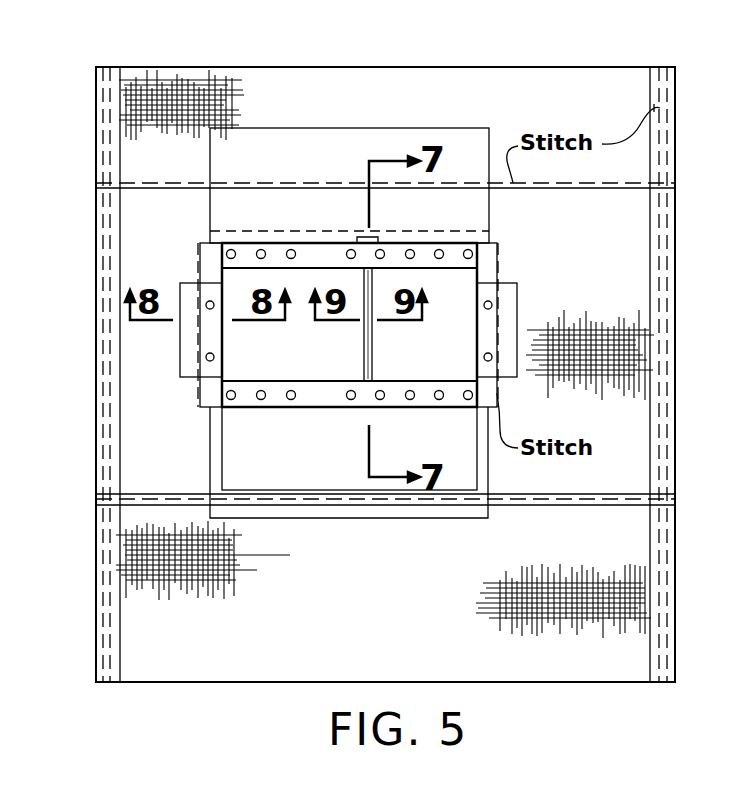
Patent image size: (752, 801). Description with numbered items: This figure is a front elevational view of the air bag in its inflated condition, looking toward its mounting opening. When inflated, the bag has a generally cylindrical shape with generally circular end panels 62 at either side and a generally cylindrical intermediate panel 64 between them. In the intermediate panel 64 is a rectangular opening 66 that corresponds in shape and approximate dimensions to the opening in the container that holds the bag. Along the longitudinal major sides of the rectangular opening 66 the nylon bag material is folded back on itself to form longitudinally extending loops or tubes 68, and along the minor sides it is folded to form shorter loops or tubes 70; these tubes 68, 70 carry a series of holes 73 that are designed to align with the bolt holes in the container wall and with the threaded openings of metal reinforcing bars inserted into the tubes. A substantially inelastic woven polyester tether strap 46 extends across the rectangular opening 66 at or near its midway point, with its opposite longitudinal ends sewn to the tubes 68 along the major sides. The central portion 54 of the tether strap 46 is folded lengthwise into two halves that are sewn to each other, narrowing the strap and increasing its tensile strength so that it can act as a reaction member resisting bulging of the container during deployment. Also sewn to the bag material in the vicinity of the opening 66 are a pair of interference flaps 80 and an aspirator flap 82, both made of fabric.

The tether strap 46 is at (355, 338).
The central portion 54 is at (375, 362).
The end panels 62 is at (86, 216).
The intermediate panel 64 is at (340, 130).
The rectangular opening 66 is at (445, 276).
The longitudinally extending loops or tubes 68 is at (308, 245).
The shorter loops or tubes 70 is at (193, 340).
The holes 73 is at (236, 249).
The interference flaps 80 is at (240, 165).
The aspirator flap 82 is at (300, 468).